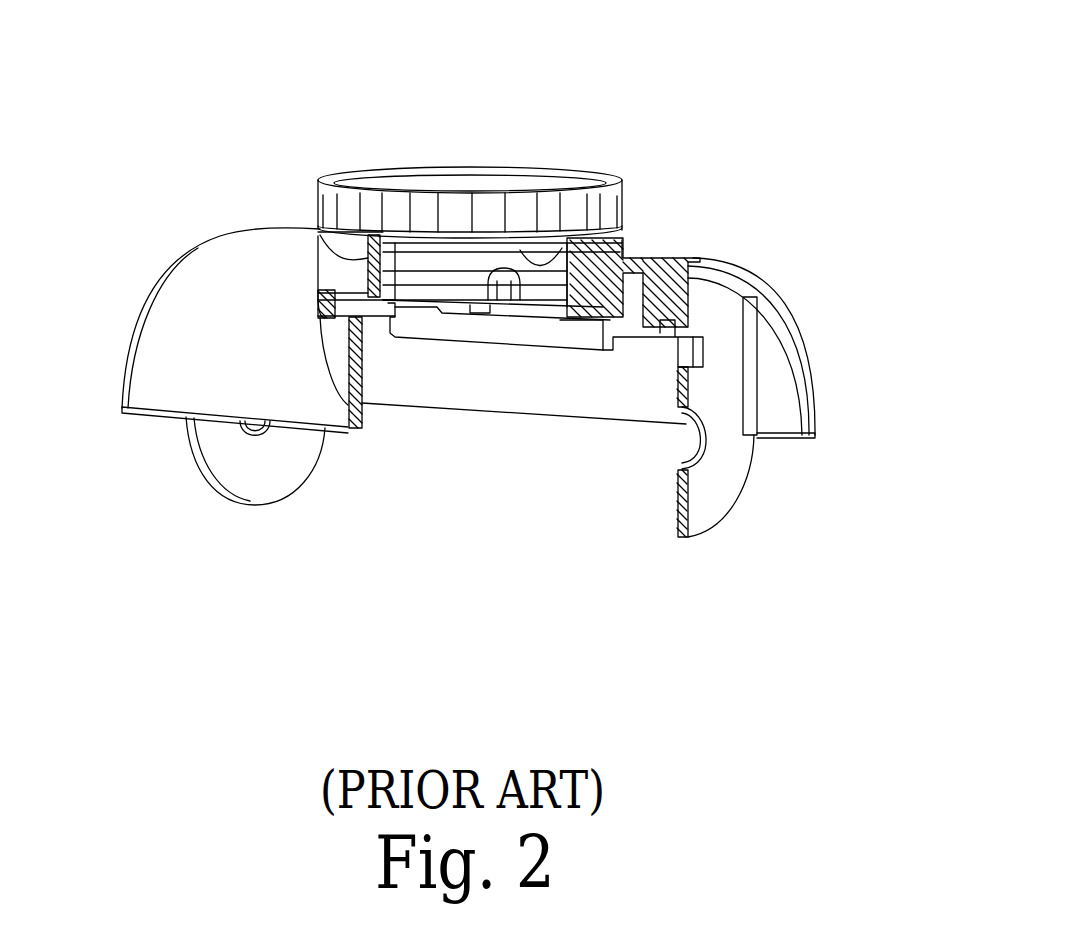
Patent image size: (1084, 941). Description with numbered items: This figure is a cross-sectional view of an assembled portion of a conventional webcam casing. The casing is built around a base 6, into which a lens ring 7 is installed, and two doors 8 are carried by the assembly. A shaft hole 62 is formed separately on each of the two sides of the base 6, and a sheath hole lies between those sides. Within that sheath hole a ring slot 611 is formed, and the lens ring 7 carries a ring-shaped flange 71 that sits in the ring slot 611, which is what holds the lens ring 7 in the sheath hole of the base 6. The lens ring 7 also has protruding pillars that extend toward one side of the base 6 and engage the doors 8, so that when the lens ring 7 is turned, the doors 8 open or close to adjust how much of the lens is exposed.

The base 6 is at (795, 270).
The lens ring 7 is at (458, 128).
The doors 8 is at (543, 333).
The shaft hole 62 is at (250, 431).
The ring-shaped flange 71 is at (558, 248).
The ring slot 611 is at (342, 266).